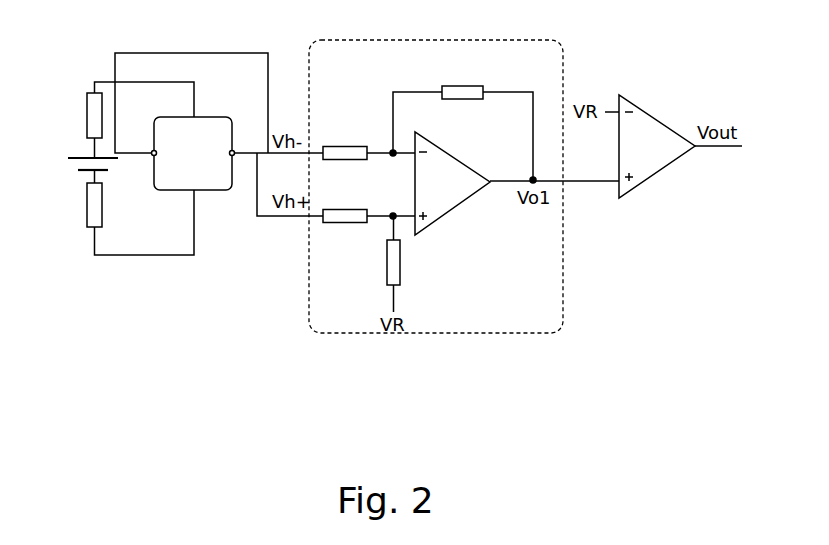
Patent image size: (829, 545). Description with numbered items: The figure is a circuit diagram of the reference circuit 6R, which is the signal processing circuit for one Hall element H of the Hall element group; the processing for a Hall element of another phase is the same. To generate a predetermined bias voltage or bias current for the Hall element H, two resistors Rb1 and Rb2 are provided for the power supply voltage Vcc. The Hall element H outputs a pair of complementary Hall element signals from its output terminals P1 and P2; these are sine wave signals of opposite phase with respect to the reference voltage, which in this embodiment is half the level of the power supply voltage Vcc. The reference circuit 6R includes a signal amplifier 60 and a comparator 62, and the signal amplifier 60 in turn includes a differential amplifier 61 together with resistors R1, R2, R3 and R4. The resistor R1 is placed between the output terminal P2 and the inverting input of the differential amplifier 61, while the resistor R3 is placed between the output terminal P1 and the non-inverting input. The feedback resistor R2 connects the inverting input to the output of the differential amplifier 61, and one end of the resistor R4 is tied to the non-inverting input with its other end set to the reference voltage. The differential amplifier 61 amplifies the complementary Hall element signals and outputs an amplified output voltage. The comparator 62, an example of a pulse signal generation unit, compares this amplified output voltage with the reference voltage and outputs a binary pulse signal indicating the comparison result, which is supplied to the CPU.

The resistor Rb1 is at (87, 121).
The resistor Rb2 is at (87, 210).
The power supply voltage Vcc is at (72, 160).
The Hall element H is at (209, 117).
The output terminal P1 is at (233, 152).
The output terminal P2 is at (153, 152).
The resistor R1 is at (345, 143).
The feedback resistor R2 is at (463, 122).
The resistor R3 is at (345, 206).
The resistor R4 is at (408, 264).
The signal amplifier 60 is at (522, 335).
The reference circuit 6R is at (397, 365).
The differential amplifier 61 is at (452, 210).
The comparator 62 is at (657, 175).